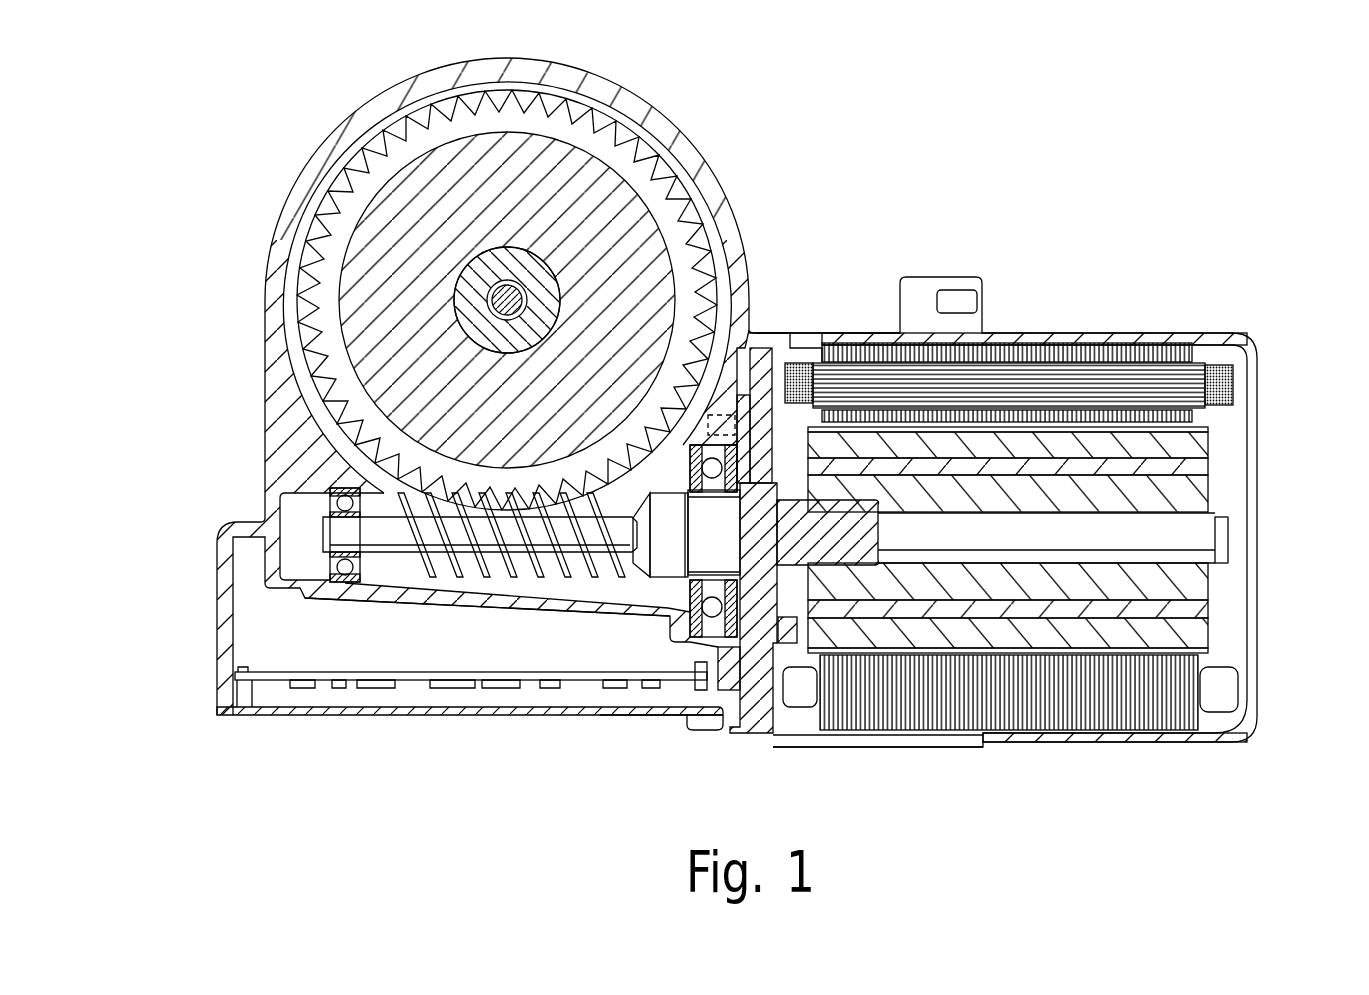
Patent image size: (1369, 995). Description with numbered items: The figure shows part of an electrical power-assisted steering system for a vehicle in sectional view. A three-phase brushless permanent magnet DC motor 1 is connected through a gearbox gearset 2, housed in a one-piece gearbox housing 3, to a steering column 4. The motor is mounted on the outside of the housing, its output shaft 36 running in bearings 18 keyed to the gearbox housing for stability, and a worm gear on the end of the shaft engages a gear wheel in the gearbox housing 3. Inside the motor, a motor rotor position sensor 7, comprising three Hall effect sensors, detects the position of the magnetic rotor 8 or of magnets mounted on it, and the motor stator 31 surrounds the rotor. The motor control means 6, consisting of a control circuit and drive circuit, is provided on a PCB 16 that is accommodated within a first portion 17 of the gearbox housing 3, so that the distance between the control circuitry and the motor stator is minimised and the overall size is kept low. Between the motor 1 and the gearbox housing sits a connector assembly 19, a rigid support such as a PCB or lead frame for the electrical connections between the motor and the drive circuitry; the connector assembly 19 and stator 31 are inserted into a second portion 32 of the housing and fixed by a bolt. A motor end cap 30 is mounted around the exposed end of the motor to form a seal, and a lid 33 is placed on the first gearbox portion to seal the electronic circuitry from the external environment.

The electric motor 1 is at (1053, 527).
The gearbox gearset 2 is at (688, 125).
The one-piece gearbox housing 3 is at (265, 487).
The steering column 4 is at (365, 270).
The motor control means 6 is at (342, 698).
The motor rotor position sensor 7 is at (780, 353).
The magnetic rotor 8 is at (1200, 468).
The PCB 16 is at (428, 688).
The first portion of the gearbox housing 17 is at (588, 650).
The bearings 18 is at (693, 600).
The connector assembly 19 is at (767, 713).
The motor end cap 30 is at (1258, 683).
The motor stator 31 is at (1048, 695).
The second portion of the gearbox housing 32 is at (862, 742).
The lid 33 is at (613, 714).
The shaft 36 is at (703, 547).